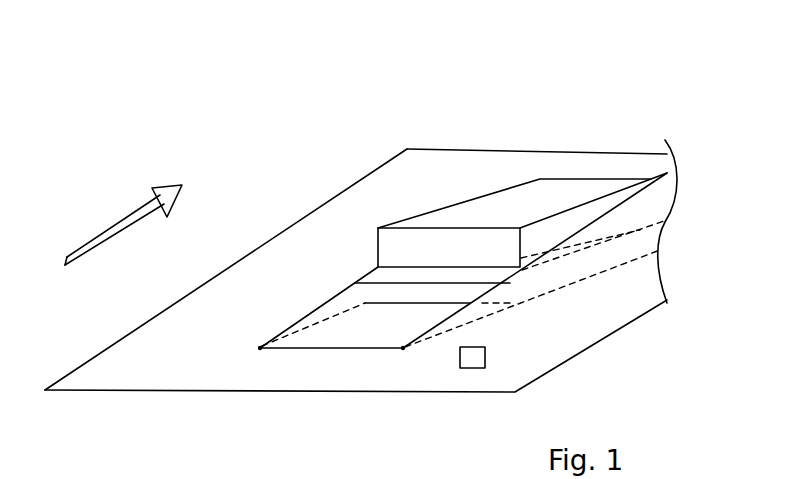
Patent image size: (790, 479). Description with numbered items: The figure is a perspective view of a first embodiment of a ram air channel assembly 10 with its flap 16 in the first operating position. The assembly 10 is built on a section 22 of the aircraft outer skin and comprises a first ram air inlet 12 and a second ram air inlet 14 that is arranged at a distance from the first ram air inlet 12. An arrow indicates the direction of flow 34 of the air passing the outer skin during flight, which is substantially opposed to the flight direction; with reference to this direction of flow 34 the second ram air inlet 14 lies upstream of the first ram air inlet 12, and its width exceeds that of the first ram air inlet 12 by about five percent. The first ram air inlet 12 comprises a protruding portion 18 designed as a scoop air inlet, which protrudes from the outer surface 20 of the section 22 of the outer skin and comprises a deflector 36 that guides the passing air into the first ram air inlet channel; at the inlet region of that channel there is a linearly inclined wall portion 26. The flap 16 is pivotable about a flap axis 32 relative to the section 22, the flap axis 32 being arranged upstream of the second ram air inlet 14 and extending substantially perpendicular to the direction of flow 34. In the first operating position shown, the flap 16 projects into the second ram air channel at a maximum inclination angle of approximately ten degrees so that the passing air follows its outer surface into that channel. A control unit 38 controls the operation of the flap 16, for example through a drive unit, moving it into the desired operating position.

The ram air channel assembly 10 is at (440, 65).
The first ram air inlet 12 is at (402, 260).
The second ram air inlet 14 is at (350, 293).
The flap 16 is at (363, 332).
The protruding portion 18 is at (481, 203).
The outer surface 20 is at (168, 352).
The section of the aircraft outer skin 22 is at (105, 347).
The linearly inclined wall portion 26 is at (487, 248).
The flap axis 32 is at (328, 351).
The direction of flow 34 is at (110, 233).
The deflector 36 is at (526, 203).
The control unit 38 is at (486, 355).